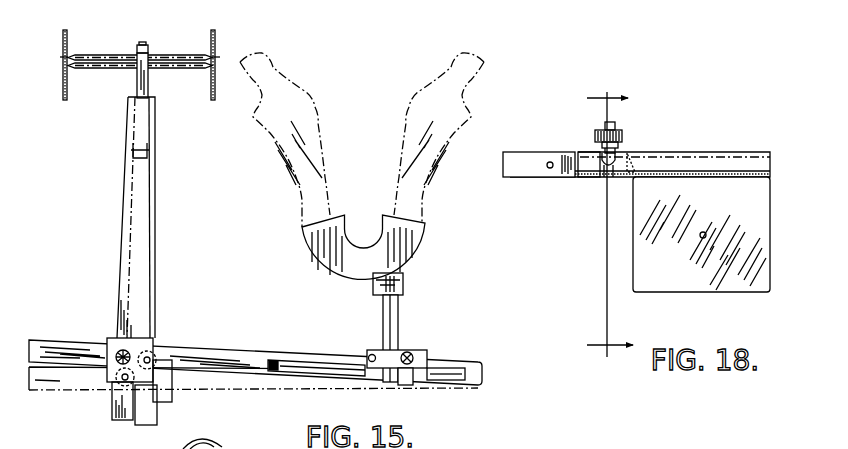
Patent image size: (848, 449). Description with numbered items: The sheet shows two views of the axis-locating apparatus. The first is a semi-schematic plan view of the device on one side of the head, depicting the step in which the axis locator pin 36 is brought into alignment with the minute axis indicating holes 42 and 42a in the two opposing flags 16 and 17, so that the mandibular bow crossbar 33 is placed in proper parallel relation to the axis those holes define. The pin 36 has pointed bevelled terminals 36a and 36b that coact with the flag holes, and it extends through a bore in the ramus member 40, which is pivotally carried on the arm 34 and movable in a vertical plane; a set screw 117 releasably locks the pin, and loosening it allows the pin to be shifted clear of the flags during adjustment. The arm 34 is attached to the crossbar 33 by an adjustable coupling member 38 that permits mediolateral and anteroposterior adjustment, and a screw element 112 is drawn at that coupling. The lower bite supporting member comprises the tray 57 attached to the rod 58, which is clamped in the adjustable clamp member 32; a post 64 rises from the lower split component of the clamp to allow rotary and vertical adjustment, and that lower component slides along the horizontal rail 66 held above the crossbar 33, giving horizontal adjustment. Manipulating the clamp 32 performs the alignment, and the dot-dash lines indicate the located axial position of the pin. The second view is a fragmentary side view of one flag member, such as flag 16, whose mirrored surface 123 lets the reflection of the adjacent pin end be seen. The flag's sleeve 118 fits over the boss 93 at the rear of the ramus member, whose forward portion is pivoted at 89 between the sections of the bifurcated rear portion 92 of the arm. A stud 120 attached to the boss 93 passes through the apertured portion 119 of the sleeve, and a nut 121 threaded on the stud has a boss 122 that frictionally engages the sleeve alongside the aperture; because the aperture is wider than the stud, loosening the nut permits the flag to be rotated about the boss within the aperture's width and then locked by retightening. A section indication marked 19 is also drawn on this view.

In FIG. 15, the flag member 16 is at (66, 33).
In FIG. 18, the flag member 16 is at (701, 251).
In FIG. 15, the flag 17 is at (212, 35).
In FIG. 15, the axis indicating hole 42 is at (62, 67).
In FIG. 18, the axis indicating hole 42 is at (700, 238).
In FIG. 15, the axis indicating hole 42a is at (216, 58).
In FIG. 15, the axis locator pin 36 is at (140, 59).
In FIG. 15, the bevelled terminal 36a is at (70, 56).
In FIG. 15, the bevelled terminal 36b is at (210, 69).
In FIG. 15, the ramus member 40 is at (149, 85).
In FIG. 15, the set screw 117 is at (142, 44).
In FIG. 15, the arm 34 is at (126, 195).
In FIG. 15, the adjustable coupling member 38 is at (150, 340).
In FIG. 15, the screw 112 is at (119, 351).
In FIG. 15, the crossbar 33 is at (210, 350).
In FIG. 15, the horizontal rail 66 is at (300, 360).
In FIG. 15, the tray 57 is at (418, 247).
In FIG. 15, the rod 58 is at (398, 312).
In FIG. 15, the post 64 is at (412, 353).
In FIG. 15, the adjustable clamp member 32 is at (428, 357).
In FIG. 18, the flag 19 is at (608, 224).
In FIG. 18, the sleeve 118 is at (720, 153).
In FIG. 18, the bifurcated rear portion 92 is at (530, 170).
In FIG. 18, the pivot 89 is at (550, 169).
In FIG. 18, the nut 121 is at (623, 136).
In FIG. 18, the stud 120 is at (613, 126).
In FIG. 18, the boss 122 is at (598, 141).
In FIG. 18, the apertured portion 119 is at (601, 166).
In FIG. 18, the boss 93 is at (631, 167).
In FIG. 18, the mirrored surface 123 is at (700, 278).